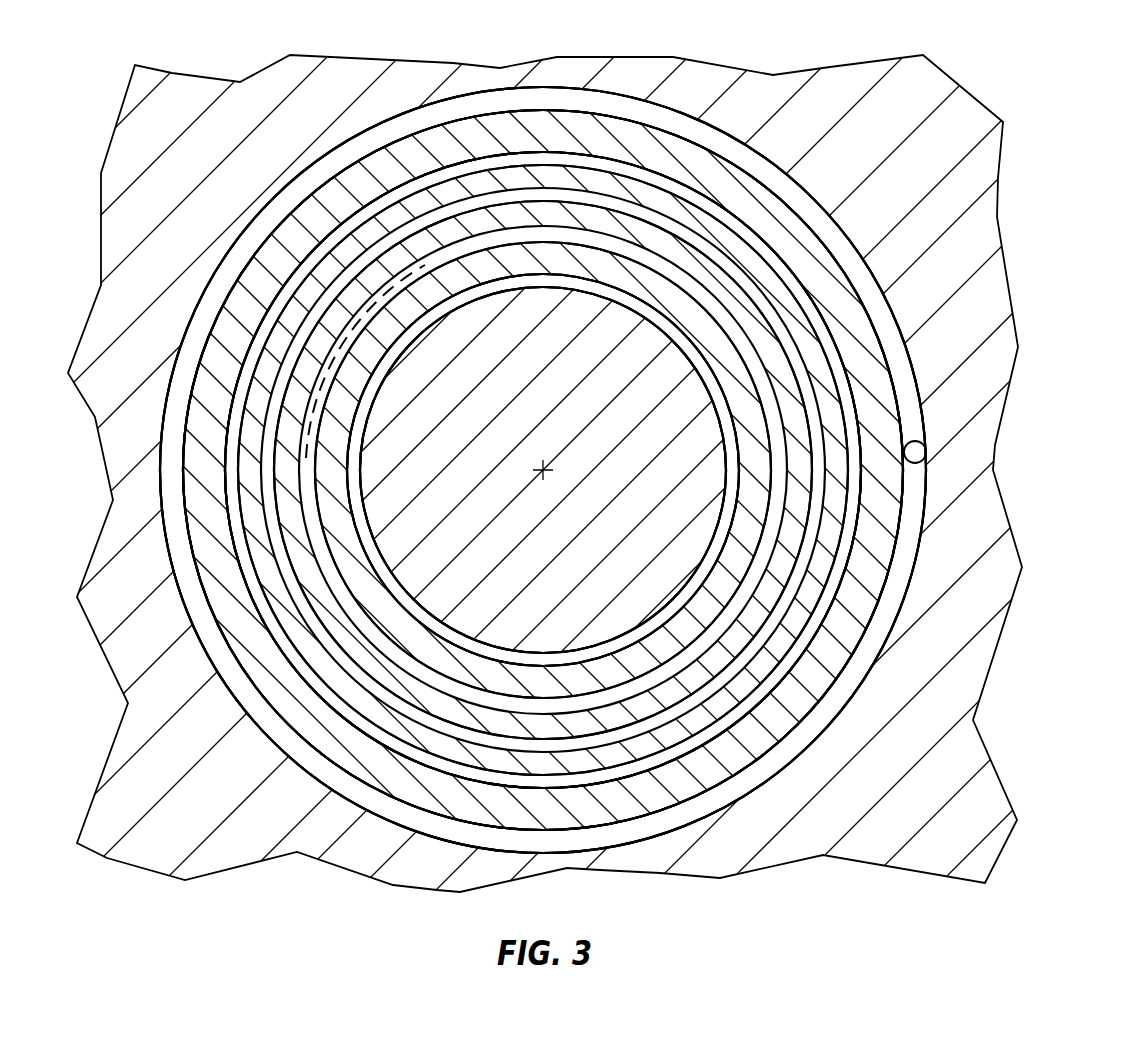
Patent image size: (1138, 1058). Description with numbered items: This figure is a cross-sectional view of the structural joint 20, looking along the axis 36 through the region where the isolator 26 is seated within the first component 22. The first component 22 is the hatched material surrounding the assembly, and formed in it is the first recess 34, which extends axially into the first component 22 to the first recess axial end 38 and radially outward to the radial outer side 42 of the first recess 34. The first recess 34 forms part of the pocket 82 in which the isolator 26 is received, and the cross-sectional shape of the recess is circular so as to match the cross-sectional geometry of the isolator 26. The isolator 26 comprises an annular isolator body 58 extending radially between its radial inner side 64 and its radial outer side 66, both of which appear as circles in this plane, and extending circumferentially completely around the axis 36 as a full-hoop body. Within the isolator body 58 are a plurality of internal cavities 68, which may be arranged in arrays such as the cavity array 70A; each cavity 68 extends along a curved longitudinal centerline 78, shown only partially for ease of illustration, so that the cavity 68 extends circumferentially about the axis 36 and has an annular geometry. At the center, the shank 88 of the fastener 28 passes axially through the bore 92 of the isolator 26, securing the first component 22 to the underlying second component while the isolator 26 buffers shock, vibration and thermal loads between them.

The structural joint 20 is at (1026, 82).
The first component 22 is at (1050, 165).
The isolator 26 is at (882, 327).
The fastener 28 is at (722, 427).
The first recess 34 is at (772, 167).
The axis 36 is at (545, 480).
The first recess axial end 38 is at (917, 490).
The radial outer side of the first recess 42 is at (926, 444).
The annular isolator body 58 is at (543, 470).
The radial inner side of the isolator 64 is at (725, 515).
The radial outer side of the isolator 66 is at (895, 554).
The internal cavities 68 is at (603, 715).
The cavity array 70A is at (240, 595).
The longitudinal centerline 78 is at (330, 305).
The pocket 82 is at (543, 470).
The shank 88 is at (543, 470).
The bore 92 is at (415, 626).